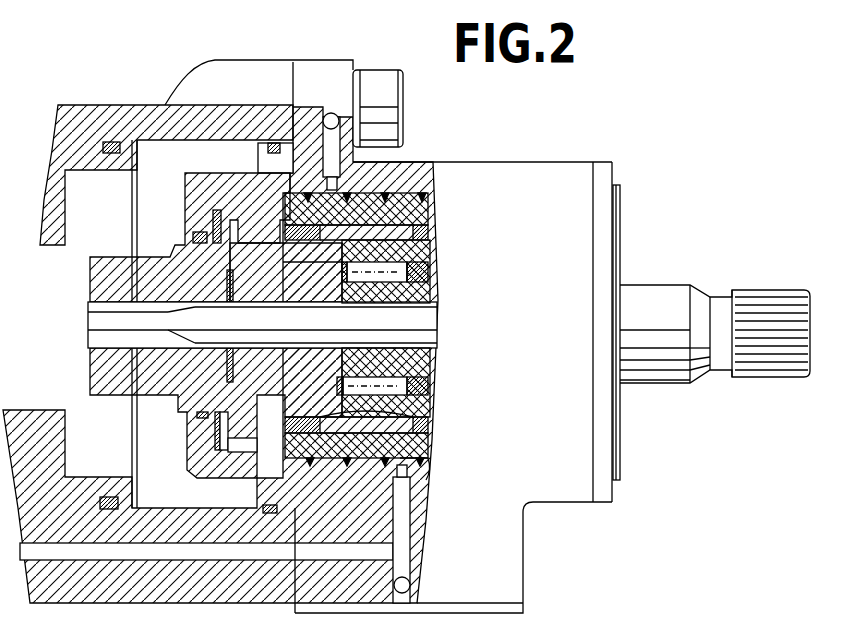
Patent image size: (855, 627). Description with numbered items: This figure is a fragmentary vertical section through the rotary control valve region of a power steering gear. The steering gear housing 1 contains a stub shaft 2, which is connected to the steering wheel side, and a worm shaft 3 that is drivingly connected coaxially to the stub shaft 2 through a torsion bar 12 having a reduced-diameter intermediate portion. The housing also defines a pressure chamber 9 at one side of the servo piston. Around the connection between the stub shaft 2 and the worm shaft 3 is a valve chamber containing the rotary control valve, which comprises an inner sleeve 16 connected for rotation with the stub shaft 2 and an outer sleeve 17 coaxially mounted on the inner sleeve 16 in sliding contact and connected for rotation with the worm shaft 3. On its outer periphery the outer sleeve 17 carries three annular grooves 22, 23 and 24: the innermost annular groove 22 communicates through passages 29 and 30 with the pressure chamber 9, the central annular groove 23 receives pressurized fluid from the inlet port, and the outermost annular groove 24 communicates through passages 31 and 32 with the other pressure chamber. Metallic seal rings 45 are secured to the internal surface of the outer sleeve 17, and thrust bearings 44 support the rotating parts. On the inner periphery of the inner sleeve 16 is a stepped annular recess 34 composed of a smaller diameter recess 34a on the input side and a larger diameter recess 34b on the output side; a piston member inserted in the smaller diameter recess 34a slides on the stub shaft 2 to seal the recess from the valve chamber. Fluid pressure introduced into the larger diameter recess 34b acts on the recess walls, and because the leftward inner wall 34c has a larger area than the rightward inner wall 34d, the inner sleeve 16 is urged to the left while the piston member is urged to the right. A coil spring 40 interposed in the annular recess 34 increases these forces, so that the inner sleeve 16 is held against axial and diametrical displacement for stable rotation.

The steering gear housing 1 is at (116, 114).
The stub shaft 2 is at (662, 292).
The worm shaft 3 is at (162, 283).
The pressure chamber 9 is at (101, 219).
The torsion bar 12 is at (266, 328).
The inner sleeve 16 is at (430, 241).
The outer sleeve 17 is at (420, 213).
The annular groove 22 is at (308, 470).
The annular groove 23 is at (365, 460).
The annular groove 24 is at (425, 477).
The passage 29 is at (334, 134).
The passage 30 is at (273, 163).
The passage 31 is at (404, 541).
The passage 32 is at (185, 548).
The stepped annular recess 34 is at (367, 283).
The smaller diameter recess 34a is at (408, 270).
The larger diameter recess 34b is at (433, 258).
The leftward inner wall 34c is at (346, 264).
The rightward inner wall 34d is at (405, 272).
The coil spring 40 is at (413, 371).
The thrust bearing 44 is at (230, 375).
The metallic seal ring 45 is at (313, 425).